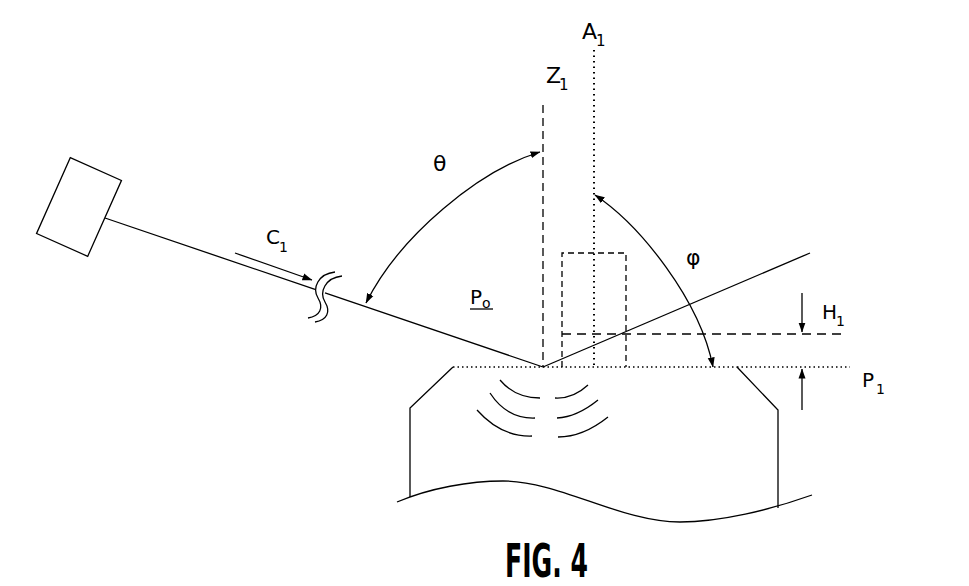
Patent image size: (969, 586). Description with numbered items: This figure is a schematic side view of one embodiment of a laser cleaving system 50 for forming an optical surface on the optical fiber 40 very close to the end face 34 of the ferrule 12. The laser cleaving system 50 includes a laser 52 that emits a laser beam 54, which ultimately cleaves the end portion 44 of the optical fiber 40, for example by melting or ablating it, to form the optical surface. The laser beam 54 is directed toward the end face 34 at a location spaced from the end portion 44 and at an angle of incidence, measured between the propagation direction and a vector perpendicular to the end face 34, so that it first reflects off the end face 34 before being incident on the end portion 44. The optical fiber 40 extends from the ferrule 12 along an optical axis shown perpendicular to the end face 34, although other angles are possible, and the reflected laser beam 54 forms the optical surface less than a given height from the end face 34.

The laser cleaving system 50 is at (305, 90).
The laser 52 is at (100, 167).
The laser beam 54 is at (222, 258).
The end face 34 is at (462, 361).
The ferrule 12 is at (410, 457).
The optical fiber 40 is at (598, 250).
The end portion 44 is at (627, 303).